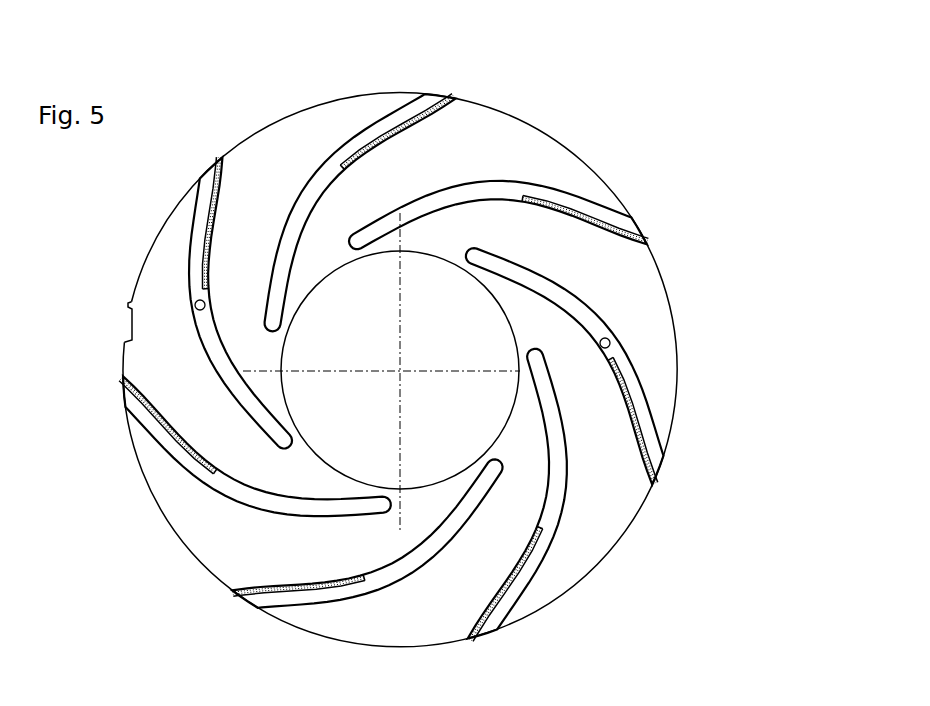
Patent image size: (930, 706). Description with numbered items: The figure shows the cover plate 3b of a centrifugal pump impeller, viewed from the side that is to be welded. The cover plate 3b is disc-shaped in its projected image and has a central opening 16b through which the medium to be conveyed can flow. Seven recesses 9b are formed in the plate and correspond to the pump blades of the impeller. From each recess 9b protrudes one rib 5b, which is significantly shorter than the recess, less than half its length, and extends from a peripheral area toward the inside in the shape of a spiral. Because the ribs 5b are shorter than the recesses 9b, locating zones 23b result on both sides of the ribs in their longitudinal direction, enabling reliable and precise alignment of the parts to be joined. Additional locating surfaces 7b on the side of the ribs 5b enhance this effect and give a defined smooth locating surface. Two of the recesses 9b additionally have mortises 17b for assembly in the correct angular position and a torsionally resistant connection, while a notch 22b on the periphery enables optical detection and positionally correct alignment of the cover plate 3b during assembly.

The cover plate 3b is at (708, 188).
The rib 5b is at (393, 118).
The locating surface 7b is at (772, 365).
The recess 9b is at (440, 177).
The central opening 16b is at (423, 295).
The mortise 17b is at (194, 302).
The notch 22b is at (127, 330).
The locating zone 23b is at (443, 97).